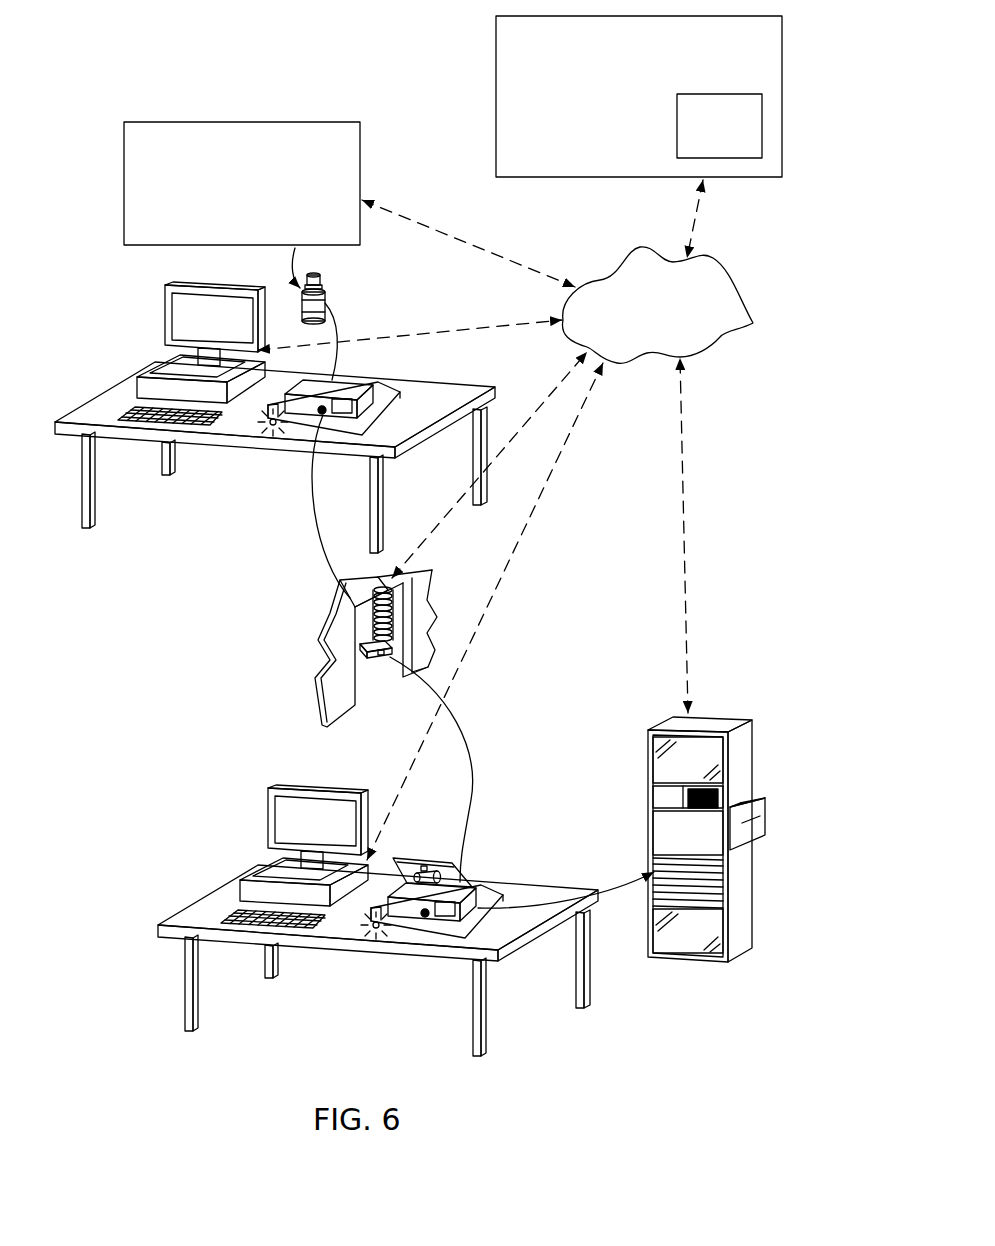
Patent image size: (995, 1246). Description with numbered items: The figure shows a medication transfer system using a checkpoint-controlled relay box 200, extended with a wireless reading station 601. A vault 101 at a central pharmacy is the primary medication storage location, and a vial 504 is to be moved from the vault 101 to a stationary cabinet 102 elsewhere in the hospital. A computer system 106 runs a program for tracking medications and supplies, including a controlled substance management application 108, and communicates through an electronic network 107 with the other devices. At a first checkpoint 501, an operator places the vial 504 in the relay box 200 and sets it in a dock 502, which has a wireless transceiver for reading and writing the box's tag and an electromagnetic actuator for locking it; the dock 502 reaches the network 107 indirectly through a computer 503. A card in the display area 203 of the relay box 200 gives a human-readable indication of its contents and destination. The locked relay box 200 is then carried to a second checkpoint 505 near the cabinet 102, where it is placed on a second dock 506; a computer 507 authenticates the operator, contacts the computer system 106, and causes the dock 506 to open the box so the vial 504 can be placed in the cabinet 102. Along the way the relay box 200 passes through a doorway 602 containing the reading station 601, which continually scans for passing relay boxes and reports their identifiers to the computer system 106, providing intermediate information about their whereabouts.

The vault 101 is at (298, 133).
The computer system 106 is at (507, 33).
The electronic network 107 is at (635, 262).
The controlled substance management (CSM) application 108 is at (745, 145).
The stationary cabinet 102 is at (667, 770).
The relay box 200 is at (343, 391).
The display area 203 is at (342, 405).
The first checkpoint 501 is at (100, 370).
The dock 502 is at (302, 427).
The computer 503 is at (158, 371).
The vial 504 is at (326, 293).
The second checkpoint 505 is at (208, 842).
The second dock 506 is at (415, 927).
The computer 507 is at (260, 867).
The wireless reading station 601 is at (338, 589).
The doorway 602 is at (360, 625).